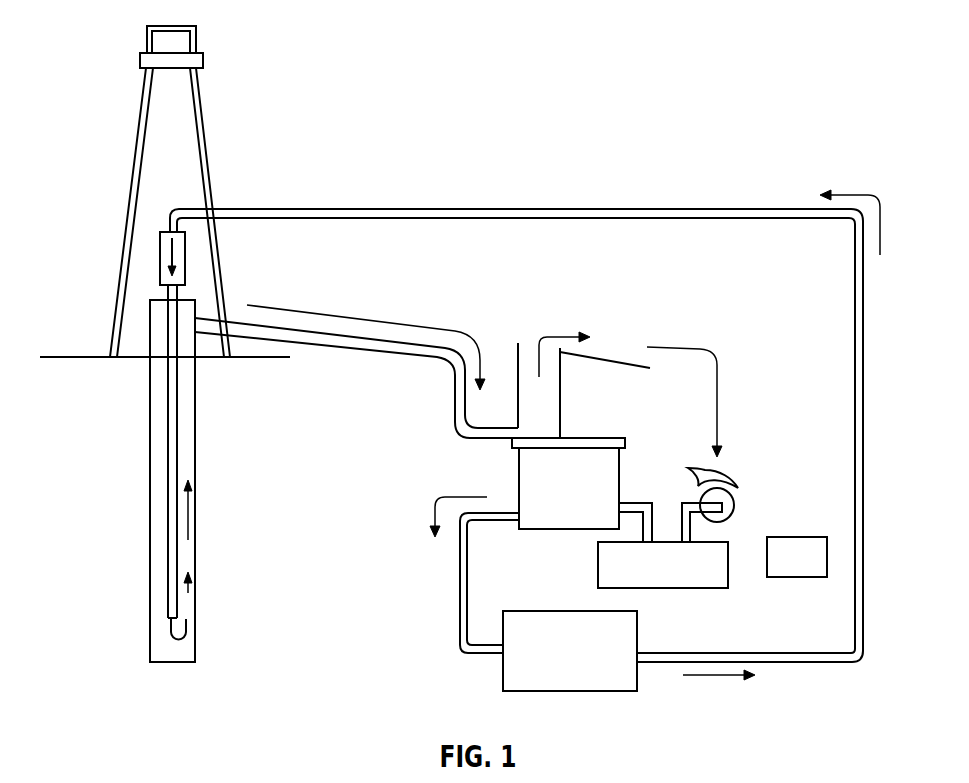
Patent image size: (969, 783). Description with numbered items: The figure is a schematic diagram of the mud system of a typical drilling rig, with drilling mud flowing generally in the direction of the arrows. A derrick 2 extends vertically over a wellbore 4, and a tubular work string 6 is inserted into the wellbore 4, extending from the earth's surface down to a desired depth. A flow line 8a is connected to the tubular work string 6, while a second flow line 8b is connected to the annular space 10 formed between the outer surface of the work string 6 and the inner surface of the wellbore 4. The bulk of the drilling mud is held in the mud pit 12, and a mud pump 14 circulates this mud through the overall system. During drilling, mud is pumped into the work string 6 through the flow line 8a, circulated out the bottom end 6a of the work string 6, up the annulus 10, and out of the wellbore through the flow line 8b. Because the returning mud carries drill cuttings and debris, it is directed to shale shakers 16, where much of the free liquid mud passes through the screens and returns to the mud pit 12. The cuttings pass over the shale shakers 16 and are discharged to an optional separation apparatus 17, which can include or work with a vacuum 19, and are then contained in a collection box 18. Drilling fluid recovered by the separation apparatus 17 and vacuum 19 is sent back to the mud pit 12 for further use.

The derrick 2 is at (200, 90).
The wellbore 4 is at (195, 588).
The tubular work string 6 is at (175, 413).
The bottom end 6a is at (160, 662).
The flow line 8a is at (232, 208).
The flow line 8b is at (325, 350).
The annular space 10 is at (192, 625).
The mud pit 12 is at (517, 475).
The mud pump 14 is at (527, 610).
The shale shakers 16 is at (615, 357).
The separation apparatus 17 is at (735, 507).
The collection box 18 is at (810, 577).
The vacuum 19 is at (708, 590).